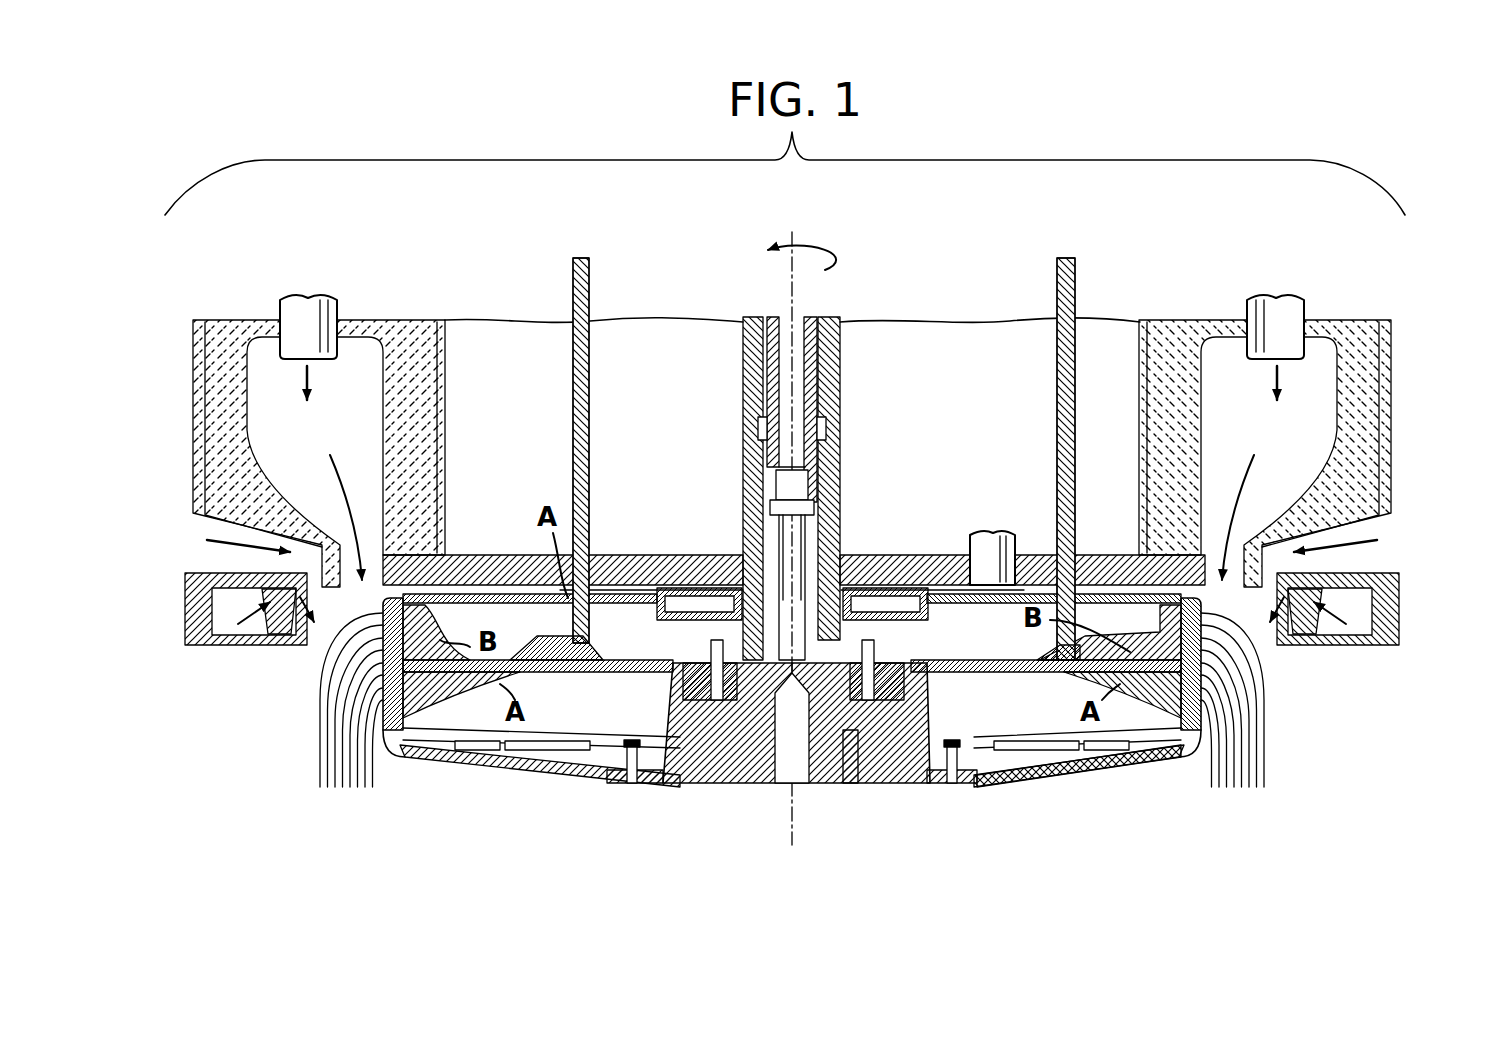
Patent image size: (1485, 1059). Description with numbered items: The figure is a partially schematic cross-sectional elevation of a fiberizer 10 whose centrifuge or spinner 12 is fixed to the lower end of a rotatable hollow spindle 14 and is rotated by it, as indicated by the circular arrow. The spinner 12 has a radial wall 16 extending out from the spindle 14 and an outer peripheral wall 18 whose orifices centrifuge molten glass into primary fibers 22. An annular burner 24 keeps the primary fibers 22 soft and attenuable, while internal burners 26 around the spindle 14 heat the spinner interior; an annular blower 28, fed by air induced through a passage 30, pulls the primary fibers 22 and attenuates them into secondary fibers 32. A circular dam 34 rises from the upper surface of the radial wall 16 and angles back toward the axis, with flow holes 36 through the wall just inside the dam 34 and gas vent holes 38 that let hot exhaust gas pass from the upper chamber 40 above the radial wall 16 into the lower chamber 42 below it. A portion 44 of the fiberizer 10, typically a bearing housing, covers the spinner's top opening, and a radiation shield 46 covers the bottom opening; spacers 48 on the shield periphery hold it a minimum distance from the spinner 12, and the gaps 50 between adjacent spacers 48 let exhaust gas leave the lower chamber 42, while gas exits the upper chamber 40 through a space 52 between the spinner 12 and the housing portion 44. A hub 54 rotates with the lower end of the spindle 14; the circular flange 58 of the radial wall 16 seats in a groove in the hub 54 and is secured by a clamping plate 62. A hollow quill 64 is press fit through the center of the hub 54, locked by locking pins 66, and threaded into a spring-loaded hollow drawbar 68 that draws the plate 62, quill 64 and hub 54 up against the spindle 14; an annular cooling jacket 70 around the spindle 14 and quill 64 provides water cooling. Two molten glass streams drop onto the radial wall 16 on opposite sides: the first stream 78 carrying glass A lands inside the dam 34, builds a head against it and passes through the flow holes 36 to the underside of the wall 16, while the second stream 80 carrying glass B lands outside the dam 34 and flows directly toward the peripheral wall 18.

The fiberizer 10 is at (1352, 290).
The spinner 12 is at (1150, 795).
The spindle 14 is at (832, 318).
The radial wall 16 is at (525, 672).
The outer peripheral wall 18 is at (388, 732).
The primary fibers 22 is at (318, 694).
The annular burner 24 is at (325, 300).
The internal burners 26 is at (985, 560).
The annular blower 28 is at (188, 623).
The passage 30 is at (801, 545).
The secondary fibers 32 is at (318, 764).
The circular dam 34 is at (515, 655).
The flow holes 36 is at (1078, 672).
The gas vent holes 38 is at (642, 672).
The upper chamber 40 is at (440, 631).
The lower chamber 42 is at (440, 726).
The portion of the fiberizer 44 is at (720, 570).
The radiation shield 46 is at (1072, 775).
The spacers 48 is at (986, 755).
The gaps 50 is at (548, 752).
The space 52 is at (1203, 592).
The hub 54 is at (660, 775).
The circular flange 58 is at (695, 702).
The clamping plate 62 is at (846, 600).
The quill 64 is at (753, 770).
The locking pins 66 is at (852, 758).
The drawbar 68 is at (768, 318).
The annular cooling jacket 70 is at (937, 612).
The first stream 78 is at (590, 428).
The second stream 80 is at (1066, 258).